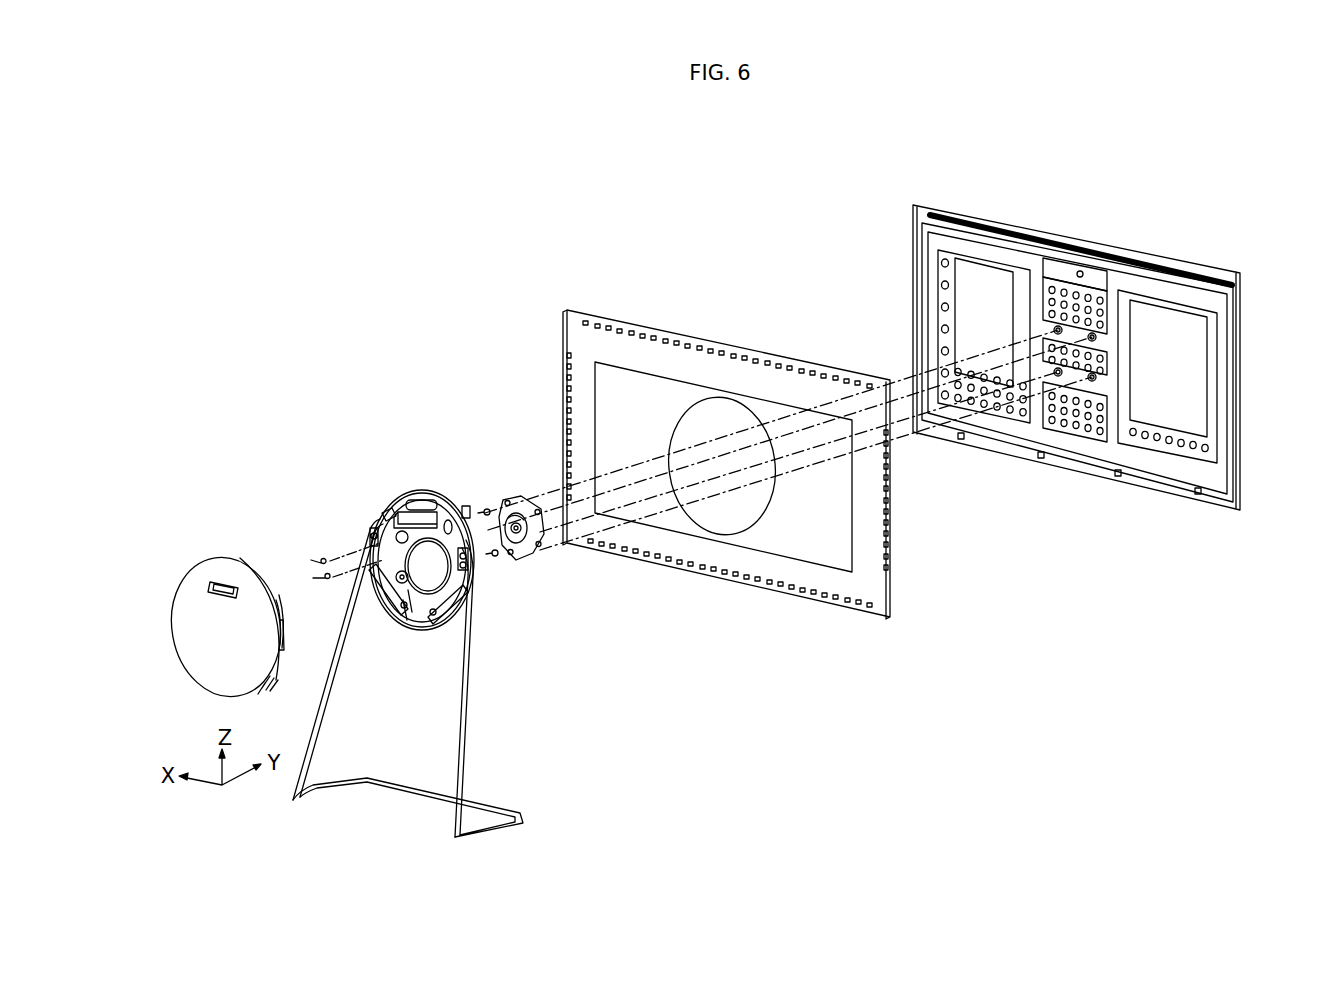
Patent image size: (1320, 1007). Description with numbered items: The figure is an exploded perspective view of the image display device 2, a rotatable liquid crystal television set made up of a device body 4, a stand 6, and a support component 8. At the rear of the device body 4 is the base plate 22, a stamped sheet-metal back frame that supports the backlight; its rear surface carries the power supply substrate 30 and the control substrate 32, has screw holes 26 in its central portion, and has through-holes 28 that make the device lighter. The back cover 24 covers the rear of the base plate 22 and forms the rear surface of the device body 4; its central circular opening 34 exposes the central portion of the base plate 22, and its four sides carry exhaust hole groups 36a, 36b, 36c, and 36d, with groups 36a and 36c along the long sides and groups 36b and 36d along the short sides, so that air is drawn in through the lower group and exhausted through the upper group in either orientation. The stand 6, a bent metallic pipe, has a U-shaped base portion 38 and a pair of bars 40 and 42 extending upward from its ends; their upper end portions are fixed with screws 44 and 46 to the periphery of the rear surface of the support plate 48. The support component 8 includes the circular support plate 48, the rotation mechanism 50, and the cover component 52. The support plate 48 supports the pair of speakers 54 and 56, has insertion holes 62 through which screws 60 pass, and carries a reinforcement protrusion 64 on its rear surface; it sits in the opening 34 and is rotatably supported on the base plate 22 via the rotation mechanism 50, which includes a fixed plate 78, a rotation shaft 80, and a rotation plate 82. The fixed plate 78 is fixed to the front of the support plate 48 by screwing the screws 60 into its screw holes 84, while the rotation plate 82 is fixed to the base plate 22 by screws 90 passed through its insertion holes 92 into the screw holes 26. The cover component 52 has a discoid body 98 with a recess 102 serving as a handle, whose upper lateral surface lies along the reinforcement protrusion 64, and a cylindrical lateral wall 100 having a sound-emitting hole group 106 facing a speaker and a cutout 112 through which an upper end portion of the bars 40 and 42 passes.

The image display device 2 is at (739, 188).
The device body 4 is at (1256, 266).
The stand 6 is at (477, 776).
The support component 8 is at (418, 472).
The base plate 22 is at (1222, 467).
The back cover 24 is at (575, 330).
The screw holes 26 is at (1090, 333).
The through-holes 28 is at (1200, 455).
The power supply substrate 30 is at (1197, 390).
The control substrate 32 is at (962, 311).
The circular opening 34 is at (708, 530).
The exhaust hole group 36a is at (650, 326).
The exhaust hole group 36b is at (892, 470).
The exhaust hole group 36c is at (745, 587).
The exhaust hole group 36d is at (565, 388).
The base portion 38 is at (407, 793).
The bar 40 is at (470, 722).
The bar 42 is at (328, 707).
The screw 44 is at (468, 565).
The screw 46 is at (367, 540).
The support plate 48 is at (423, 492).
The rotation mechanism 50 is at (530, 562).
The cover component 52 is at (257, 492).
The speaker 54 is at (380, 600).
The speaker 56 is at (447, 623).
The screws 60 is at (322, 578).
The insertion holes 62 is at (387, 520).
The reinforcement protrusion 64 is at (405, 510).
The fixed plate 78 is at (547, 566).
The rotation shaft 80 is at (496, 509).
The rotation plate 82 is at (525, 500).
The screw hole 84 is at (545, 540).
The screws 90 is at (505, 553).
The insertion hole 92 is at (465, 513).
The body 98 is at (197, 562).
The lateral wall 100 is at (226, 585).
The recess 102 is at (205, 600).
The sound-emitting hole group 106 is at (273, 677).
The cutout 112 is at (284, 640).